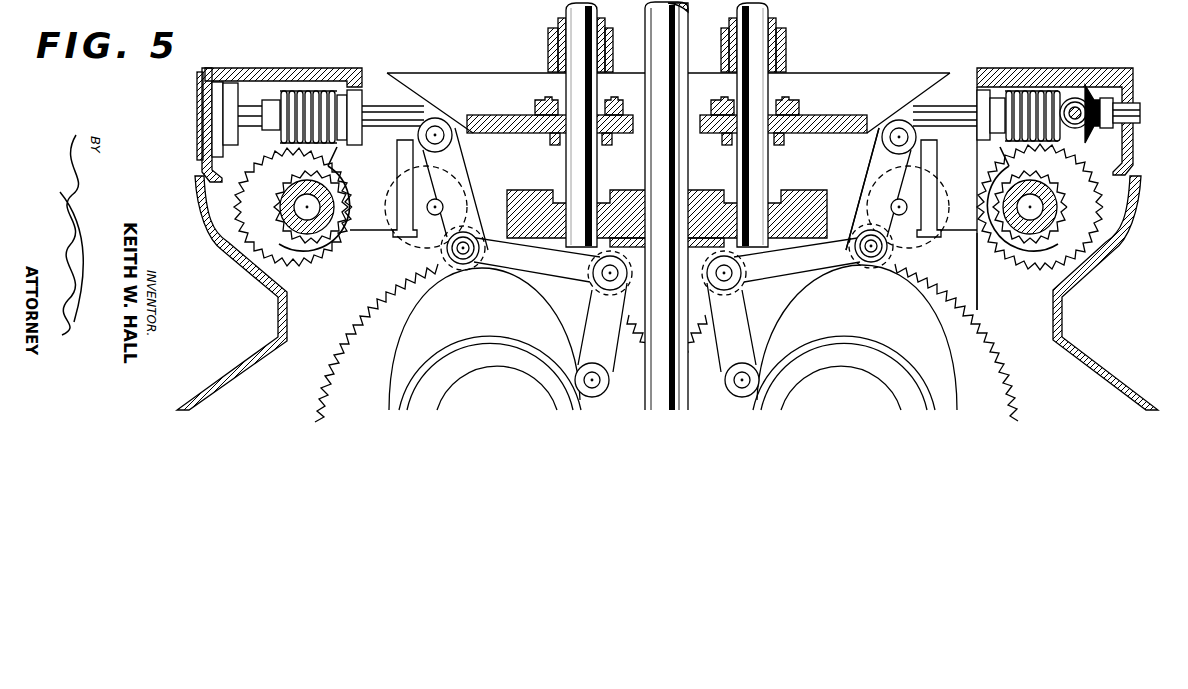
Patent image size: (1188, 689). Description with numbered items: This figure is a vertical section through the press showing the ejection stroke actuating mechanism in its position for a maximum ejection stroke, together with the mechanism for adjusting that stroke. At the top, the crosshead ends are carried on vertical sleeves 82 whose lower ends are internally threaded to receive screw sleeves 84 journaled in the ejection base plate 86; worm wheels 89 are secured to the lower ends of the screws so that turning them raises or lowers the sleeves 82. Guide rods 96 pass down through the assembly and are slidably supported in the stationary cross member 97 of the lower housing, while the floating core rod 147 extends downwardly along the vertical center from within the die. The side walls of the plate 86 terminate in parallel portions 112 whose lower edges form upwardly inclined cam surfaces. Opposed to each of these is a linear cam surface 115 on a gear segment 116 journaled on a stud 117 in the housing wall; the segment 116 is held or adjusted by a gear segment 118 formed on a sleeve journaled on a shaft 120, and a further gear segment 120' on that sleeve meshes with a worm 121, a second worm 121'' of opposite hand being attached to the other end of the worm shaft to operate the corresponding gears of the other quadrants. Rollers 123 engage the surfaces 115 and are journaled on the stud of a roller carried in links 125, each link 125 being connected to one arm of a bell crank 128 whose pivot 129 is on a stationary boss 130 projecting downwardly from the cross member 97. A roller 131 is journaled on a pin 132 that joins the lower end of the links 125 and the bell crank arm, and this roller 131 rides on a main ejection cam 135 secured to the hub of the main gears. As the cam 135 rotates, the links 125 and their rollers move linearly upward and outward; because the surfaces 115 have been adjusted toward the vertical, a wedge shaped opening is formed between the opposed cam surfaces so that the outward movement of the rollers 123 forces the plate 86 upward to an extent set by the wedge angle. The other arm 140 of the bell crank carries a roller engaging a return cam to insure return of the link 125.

The vertical sleeve 82 is at (790, 48).
The screw sleeve 84 is at (770, 83).
The ejection base plate 86 is at (852, 115).
The worm wheel 89 is at (540, 103).
The rod 96 is at (575, 14).
The stationary cross member 97 is at (543, 190).
The parallel portion 112 is at (404, 85).
The linear cam surface 115 is at (422, 166).
The gear segment 116 is at (966, 224).
The stud 117 is at (443, 205).
The gear segment 118 is at (336, 247).
The shaft 120 is at (293, 207).
The gear segment 120' is at (1071, 207).
The worm 121 is at (1058, 92).
The second worm 121'' is at (321, 95).
The roller 123 is at (455, 147).
The link 125 is at (873, 176).
The bell crank 128 is at (540, 279).
The pivot 129 is at (727, 273).
The stationary boss 130 is at (695, 297).
The roller 131 is at (441, 252).
The pin 132 is at (871, 252).
The main ejection cam 135 is at (390, 366).
The arm 140 is at (600, 326).
The floating core rod 147 is at (673, 33).